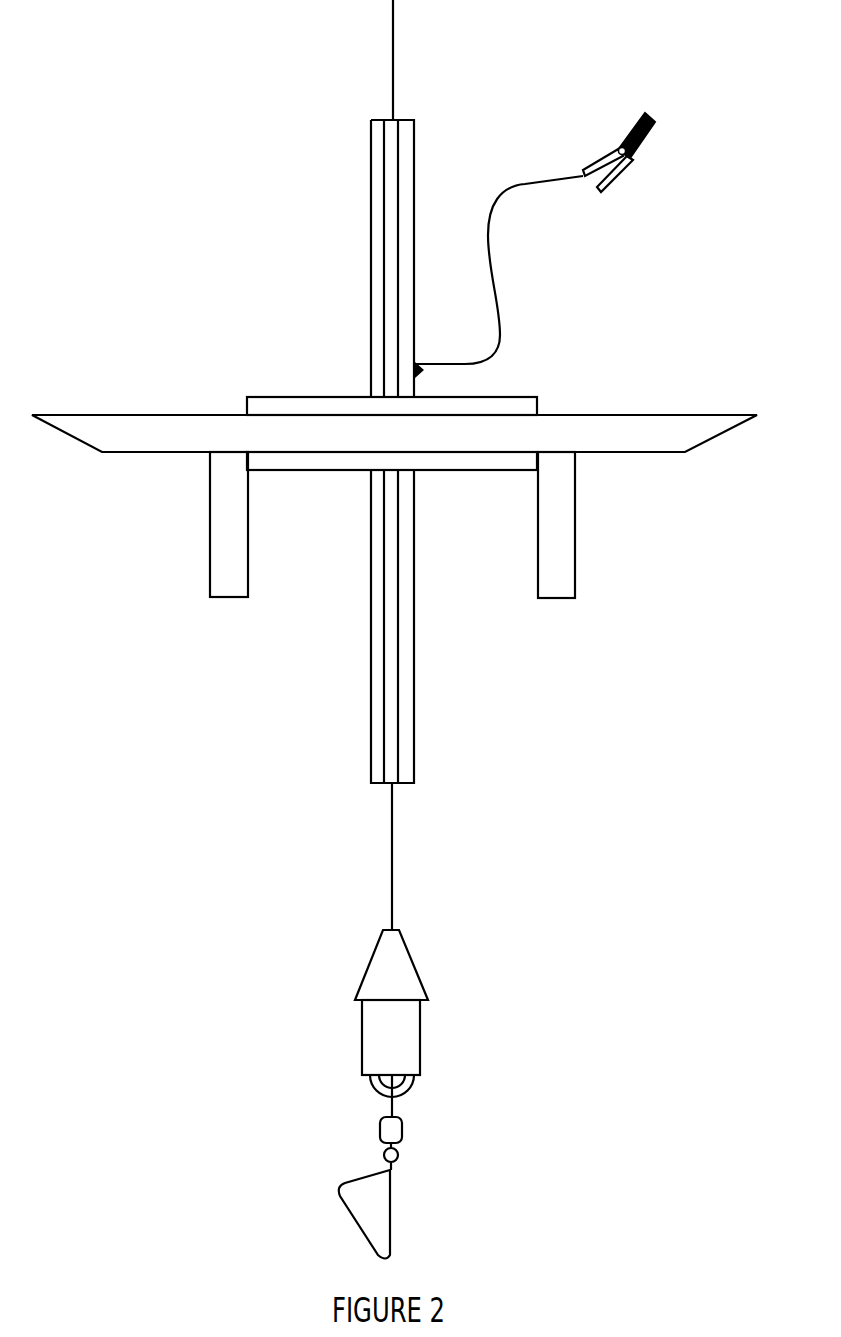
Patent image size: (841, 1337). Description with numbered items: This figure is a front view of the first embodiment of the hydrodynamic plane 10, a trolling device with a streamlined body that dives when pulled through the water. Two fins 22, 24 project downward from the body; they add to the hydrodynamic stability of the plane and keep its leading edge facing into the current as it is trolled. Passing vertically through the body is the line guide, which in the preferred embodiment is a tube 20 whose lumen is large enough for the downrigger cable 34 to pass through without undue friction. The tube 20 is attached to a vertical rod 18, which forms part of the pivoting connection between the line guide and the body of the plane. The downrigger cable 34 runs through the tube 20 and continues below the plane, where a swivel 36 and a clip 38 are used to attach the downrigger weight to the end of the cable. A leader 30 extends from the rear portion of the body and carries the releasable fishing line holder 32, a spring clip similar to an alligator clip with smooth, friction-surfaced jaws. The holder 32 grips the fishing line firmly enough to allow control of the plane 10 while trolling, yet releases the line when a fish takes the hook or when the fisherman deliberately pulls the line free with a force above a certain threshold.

The hydrodynamic plane 10 is at (618, 400).
The vertical rod 18 is at (414, 748).
The tube 20 is at (384, 713).
The fin 22 is at (575, 575).
The fin 24 is at (210, 566).
The leader 30 is at (499, 322).
The releasable fishing line holder 32 is at (634, 170).
The downrigger cable 34 is at (393, 82).
The swivel 36 is at (421, 1045).
The clip 38 is at (392, 1208).